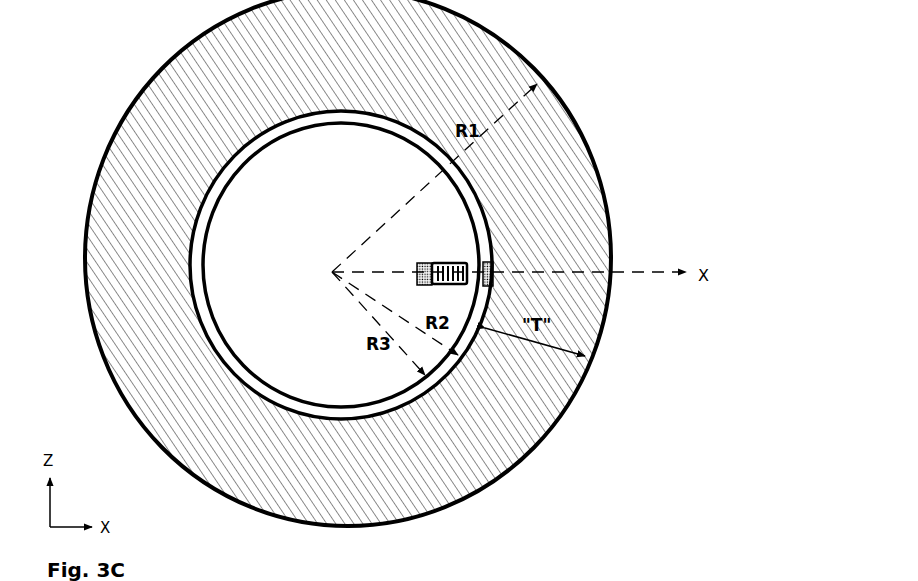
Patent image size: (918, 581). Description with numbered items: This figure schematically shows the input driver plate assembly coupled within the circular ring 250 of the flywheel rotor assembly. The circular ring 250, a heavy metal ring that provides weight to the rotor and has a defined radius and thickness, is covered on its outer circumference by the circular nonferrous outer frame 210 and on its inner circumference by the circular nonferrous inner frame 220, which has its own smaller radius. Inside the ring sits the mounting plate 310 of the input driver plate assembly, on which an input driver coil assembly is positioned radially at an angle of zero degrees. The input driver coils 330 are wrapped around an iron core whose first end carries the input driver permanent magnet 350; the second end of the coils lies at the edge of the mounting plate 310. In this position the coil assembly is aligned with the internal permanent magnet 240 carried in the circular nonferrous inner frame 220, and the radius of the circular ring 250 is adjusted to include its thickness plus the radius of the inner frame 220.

The circular nonferrous outer frame 210 is at (490, 33).
The circular nonferrous inner frame 220 is at (321, 110).
The internal permanent magnet 240 is at (494, 262).
The circular ring 250 is at (373, 64).
The mounting plate 310 is at (358, 189).
The input driver coils 330 is at (449, 263).
The input driver permanent magnet 350 is at (419, 264).